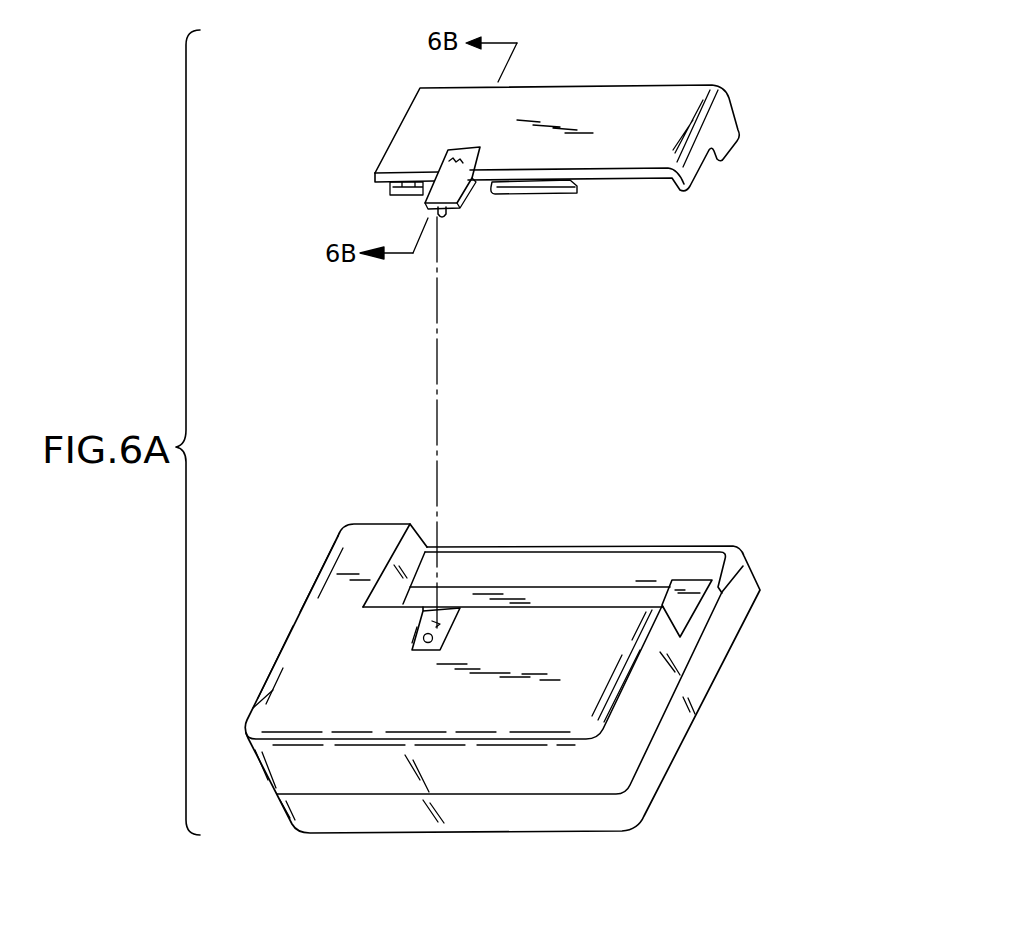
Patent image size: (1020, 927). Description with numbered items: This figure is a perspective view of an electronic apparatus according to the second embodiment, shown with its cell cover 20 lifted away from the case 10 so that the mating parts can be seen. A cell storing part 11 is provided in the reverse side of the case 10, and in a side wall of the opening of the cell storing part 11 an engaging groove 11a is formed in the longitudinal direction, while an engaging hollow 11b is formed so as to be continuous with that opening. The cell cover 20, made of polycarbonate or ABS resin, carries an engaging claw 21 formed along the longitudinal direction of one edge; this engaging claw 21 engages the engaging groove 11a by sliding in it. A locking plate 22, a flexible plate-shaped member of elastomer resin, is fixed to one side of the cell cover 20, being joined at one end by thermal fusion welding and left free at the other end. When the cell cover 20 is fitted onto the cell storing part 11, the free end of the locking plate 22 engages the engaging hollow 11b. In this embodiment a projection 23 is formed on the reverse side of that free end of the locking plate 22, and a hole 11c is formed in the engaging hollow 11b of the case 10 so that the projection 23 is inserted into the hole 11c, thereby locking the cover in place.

The case 10 is at (677, 738).
The cell storing part 11 is at (585, 567).
The engaging groove 11a is at (667, 619).
The engaging hollow 11b is at (414, 624).
The hole 11c is at (416, 645).
The cell cover 20 is at (657, 82).
The engaging claw 21 is at (567, 187).
The locking plate 22 is at (457, 197).
The projection 23 is at (445, 218).